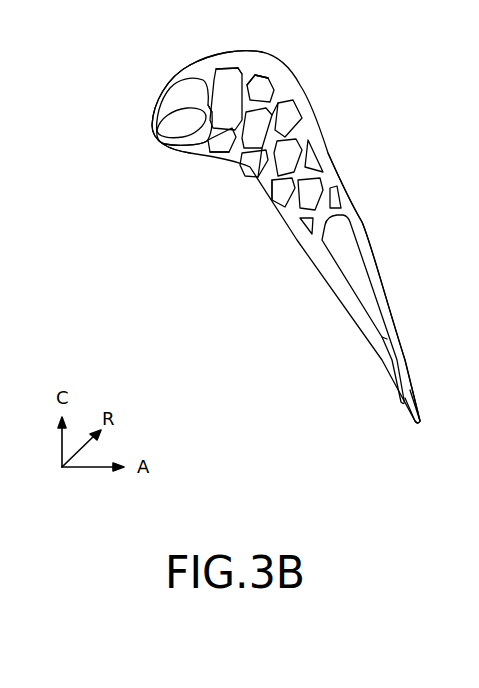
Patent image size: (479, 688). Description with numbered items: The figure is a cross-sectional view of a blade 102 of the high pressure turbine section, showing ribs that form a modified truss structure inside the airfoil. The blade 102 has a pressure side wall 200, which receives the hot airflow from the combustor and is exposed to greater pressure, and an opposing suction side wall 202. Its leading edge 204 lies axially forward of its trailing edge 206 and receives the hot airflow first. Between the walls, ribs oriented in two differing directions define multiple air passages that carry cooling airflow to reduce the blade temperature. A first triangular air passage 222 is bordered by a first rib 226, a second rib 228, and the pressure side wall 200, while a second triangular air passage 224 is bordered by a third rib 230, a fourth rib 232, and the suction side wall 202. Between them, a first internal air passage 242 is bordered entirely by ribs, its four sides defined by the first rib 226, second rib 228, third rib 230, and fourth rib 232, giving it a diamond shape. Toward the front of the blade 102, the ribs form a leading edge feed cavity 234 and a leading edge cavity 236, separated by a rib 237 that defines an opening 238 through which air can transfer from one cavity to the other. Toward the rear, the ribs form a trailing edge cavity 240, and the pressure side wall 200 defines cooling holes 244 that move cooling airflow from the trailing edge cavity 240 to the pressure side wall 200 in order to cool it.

The blade 102 is at (128, 87).
The pressure side wall 200 is at (262, 245).
The suction side wall 202 is at (363, 221).
The leading edge 204 is at (152, 118).
The trailing edge 206 is at (420, 425).
The first triangular air passage 222 is at (257, 181).
The second triangular air passage 224 is at (250, 92).
The first rib 226 is at (240, 156).
The second rib 228 is at (270, 172).
The third rib 230 is at (243, 90).
The fourth rib 232 is at (260, 110).
The leading edge feed cavity 234 is at (233, 77).
The leading edge cavity 236 is at (185, 106).
The rib 237 is at (170, 136).
The opening 238 is at (160, 125).
The trailing edge cavity 240 is at (360, 286).
The first internal air passage 242 is at (259, 120).
The cooling holes 244 is at (395, 388).